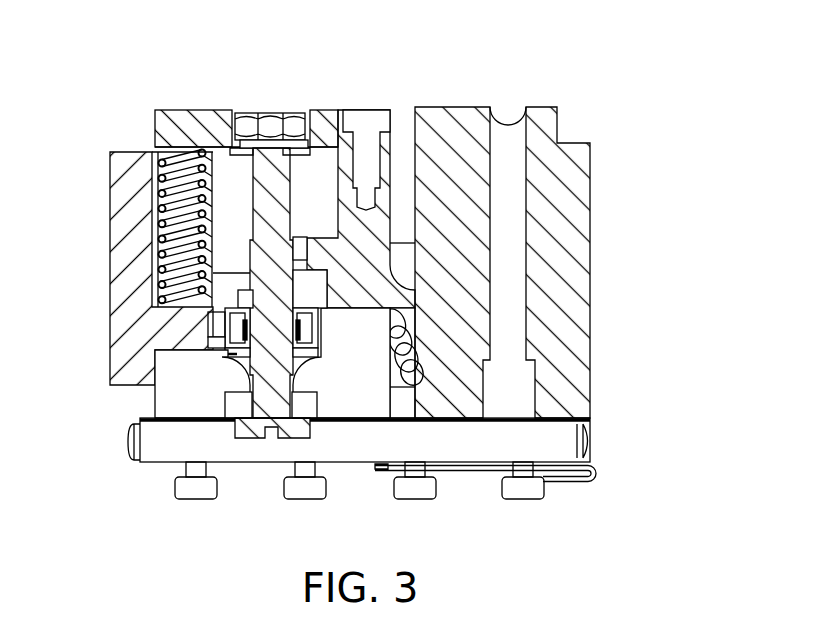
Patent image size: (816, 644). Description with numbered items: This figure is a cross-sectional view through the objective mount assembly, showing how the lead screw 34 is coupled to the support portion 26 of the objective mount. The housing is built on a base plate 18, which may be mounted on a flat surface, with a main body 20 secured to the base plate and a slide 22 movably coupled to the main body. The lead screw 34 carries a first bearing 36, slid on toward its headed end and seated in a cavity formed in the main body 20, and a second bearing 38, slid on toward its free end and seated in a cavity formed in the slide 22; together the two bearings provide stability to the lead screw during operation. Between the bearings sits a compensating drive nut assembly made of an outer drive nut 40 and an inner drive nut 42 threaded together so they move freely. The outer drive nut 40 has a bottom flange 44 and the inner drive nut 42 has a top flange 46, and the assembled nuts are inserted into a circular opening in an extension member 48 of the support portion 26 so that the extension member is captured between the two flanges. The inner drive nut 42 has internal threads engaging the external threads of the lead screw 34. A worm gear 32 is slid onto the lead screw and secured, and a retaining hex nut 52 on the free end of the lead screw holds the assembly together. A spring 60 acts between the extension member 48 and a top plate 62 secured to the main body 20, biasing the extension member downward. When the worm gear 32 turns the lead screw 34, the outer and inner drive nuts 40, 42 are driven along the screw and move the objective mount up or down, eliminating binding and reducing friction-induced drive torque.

The base plate 18 is at (160, 445).
The main body 20 is at (582, 217).
The slide 22 is at (180, 365).
The support portion 26 is at (125, 207).
The worm gear 32 is at (317, 183).
The lead screw 34 is at (305, 422).
The first bearing 36 is at (237, 402).
The second bearing 38 is at (303, 247).
The outer drive nut 40 is at (222, 352).
The inner drive nut 42 is at (310, 330).
The bottom flange 44 is at (237, 354).
The top flange 46 is at (238, 305).
The extension member 48 is at (218, 312).
The retaining hex nut 52 is at (250, 120).
The spring 60 is at (180, 173).
The top plate 62 is at (200, 120).